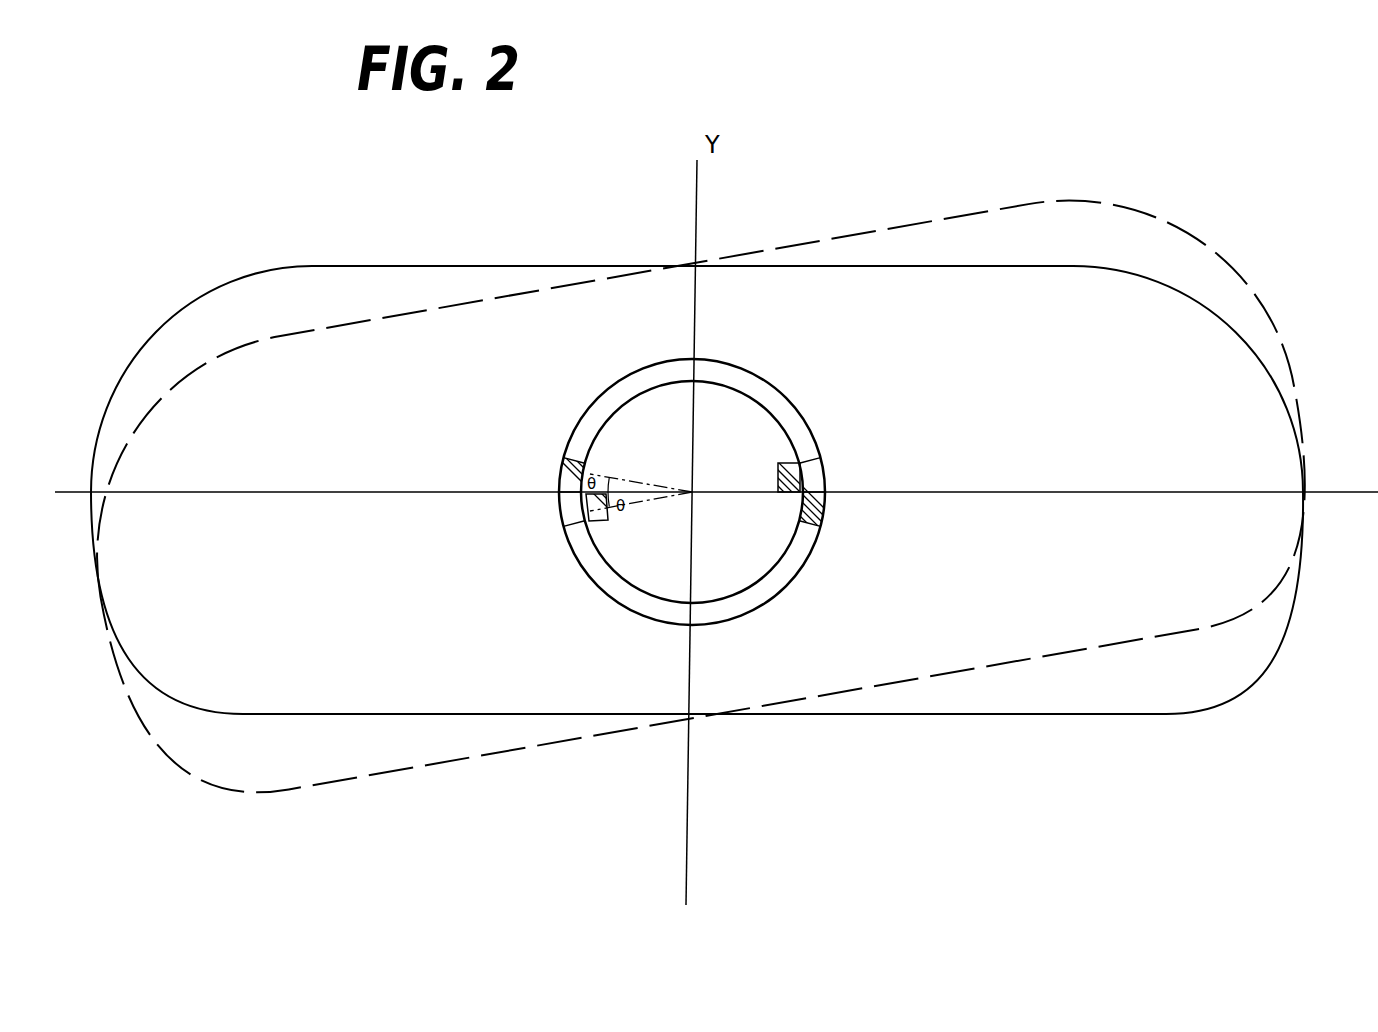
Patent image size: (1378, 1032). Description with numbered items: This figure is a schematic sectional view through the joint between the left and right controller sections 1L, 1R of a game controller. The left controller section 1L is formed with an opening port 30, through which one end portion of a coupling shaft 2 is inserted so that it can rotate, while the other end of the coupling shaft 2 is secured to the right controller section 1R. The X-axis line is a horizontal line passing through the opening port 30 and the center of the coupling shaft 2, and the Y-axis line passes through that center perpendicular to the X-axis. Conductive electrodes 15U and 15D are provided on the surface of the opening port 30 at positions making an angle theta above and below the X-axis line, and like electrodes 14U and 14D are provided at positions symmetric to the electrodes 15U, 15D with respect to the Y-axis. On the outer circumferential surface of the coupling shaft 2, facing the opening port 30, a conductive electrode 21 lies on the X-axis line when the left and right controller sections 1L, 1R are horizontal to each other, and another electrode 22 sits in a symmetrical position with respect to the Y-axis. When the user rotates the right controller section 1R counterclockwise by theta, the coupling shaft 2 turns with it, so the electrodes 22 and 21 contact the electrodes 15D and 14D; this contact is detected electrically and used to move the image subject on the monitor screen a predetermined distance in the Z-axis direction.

The left controller section 1L is at (506, 264).
The right controller section 1R is at (963, 214).
The coupling shaft 2 is at (745, 410).
The opening port 30 is at (636, 382).
The conductive electrode 14U is at (822, 470).
The conductive electrode 14D is at (818, 524).
The conductive electrode 15U is at (566, 468).
The conductive electrode 15D is at (567, 520).
The conductive electrode 21 is at (778, 476).
The electrode 22 is at (600, 521).